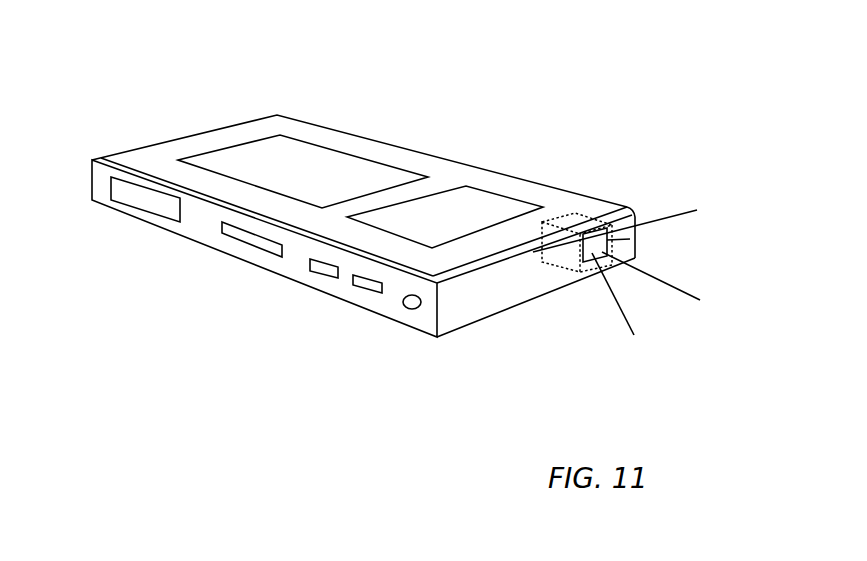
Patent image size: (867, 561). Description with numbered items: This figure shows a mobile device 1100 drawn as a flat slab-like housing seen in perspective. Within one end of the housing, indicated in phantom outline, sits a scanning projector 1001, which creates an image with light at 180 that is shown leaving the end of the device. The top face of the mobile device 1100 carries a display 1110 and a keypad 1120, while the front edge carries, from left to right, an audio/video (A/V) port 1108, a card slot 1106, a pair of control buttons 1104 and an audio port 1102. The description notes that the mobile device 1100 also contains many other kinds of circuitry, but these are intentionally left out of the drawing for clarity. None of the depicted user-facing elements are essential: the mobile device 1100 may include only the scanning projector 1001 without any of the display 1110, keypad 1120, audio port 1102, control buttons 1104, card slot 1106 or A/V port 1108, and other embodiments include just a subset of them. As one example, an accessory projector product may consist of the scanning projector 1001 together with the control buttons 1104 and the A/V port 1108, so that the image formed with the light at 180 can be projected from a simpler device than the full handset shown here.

The mobile device 1100 is at (655, 72).
The keypad 1120 is at (312, 155).
The display 1110 is at (455, 193).
The audio/video (A/V) port 1108 is at (130, 197).
The card slot 1106 is at (247, 238).
The control buttons 1104 is at (360, 285).
The audio port 1102 is at (411, 309).
The scanning projector 1001 is at (577, 216).
The light 180 is at (628, 272).